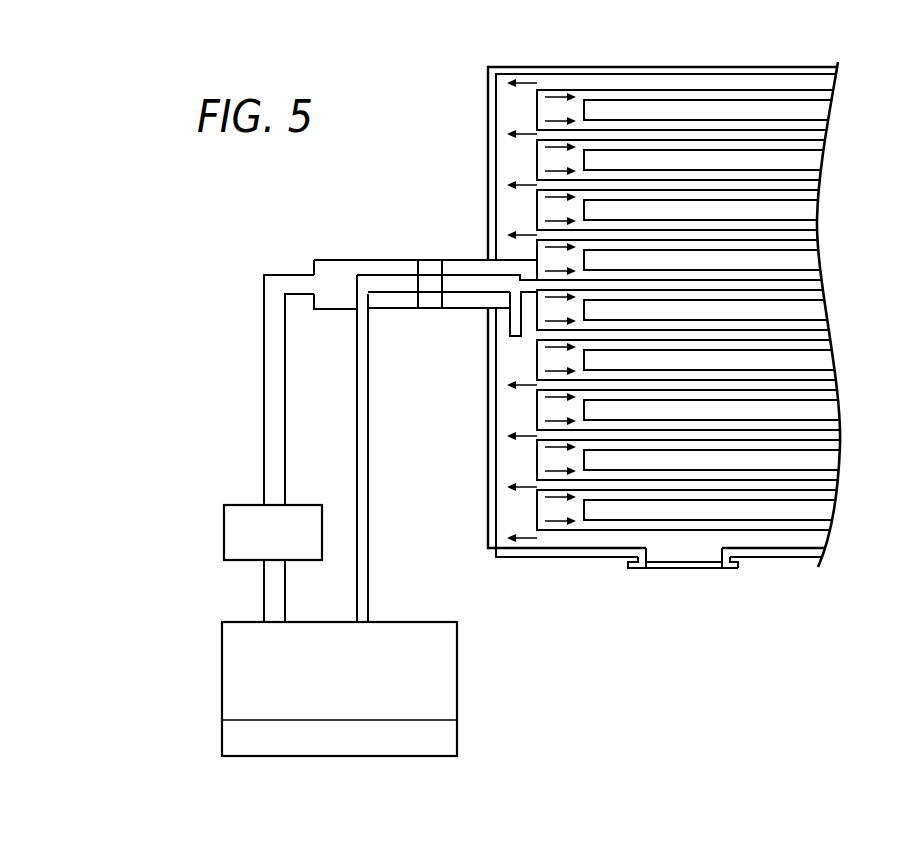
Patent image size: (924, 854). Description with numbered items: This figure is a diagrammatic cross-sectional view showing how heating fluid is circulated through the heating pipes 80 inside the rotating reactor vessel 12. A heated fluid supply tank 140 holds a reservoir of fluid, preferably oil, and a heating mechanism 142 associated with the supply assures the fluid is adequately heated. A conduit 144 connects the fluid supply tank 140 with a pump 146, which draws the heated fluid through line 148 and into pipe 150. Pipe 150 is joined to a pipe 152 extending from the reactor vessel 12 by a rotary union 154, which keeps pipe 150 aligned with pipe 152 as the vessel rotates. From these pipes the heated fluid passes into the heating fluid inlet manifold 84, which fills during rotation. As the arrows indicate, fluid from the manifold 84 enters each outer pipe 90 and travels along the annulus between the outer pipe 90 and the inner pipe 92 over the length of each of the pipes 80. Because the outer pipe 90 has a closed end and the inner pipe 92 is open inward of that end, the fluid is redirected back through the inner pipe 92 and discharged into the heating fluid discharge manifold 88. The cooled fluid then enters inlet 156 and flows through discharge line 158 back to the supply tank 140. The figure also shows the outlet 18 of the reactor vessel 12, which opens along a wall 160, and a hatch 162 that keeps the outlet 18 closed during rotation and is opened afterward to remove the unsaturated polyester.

The reactor vessel 12 is at (703, 67).
The outlet 18 is at (683, 563).
The heating pipes 80 is at (813, 137).
The heating fluid inlet manifold 84 is at (574, 101).
The heating fluid discharge manifold 88 is at (505, 113).
The outer pipe 90 is at (810, 120).
The inner pipe 92 is at (806, 148).
The heated fluid supply tank 140 is at (457, 644).
The heating mechanism 142 is at (457, 738).
The conduit 144 is at (264, 602).
The pump 146 is at (233, 515).
The line 148 is at (264, 378).
The pipe 150 is at (406, 270).
The pipe 152 is at (463, 260).
The rotary union 154 is at (428, 309).
The inlet 156 is at (513, 337).
The discharge line 158 is at (368, 472).
The wall 160 is at (780, 557).
The hatch 162 is at (630, 566).